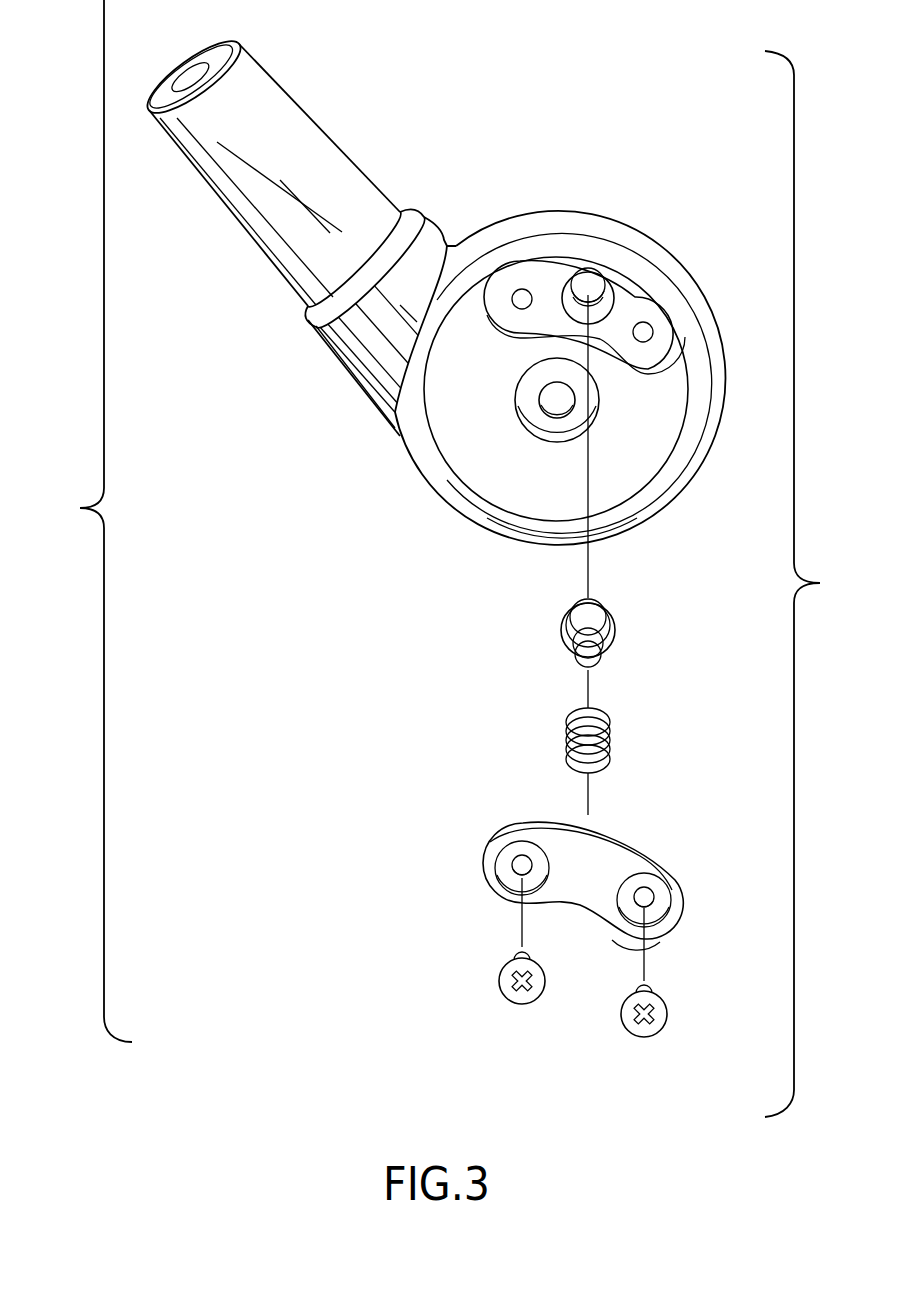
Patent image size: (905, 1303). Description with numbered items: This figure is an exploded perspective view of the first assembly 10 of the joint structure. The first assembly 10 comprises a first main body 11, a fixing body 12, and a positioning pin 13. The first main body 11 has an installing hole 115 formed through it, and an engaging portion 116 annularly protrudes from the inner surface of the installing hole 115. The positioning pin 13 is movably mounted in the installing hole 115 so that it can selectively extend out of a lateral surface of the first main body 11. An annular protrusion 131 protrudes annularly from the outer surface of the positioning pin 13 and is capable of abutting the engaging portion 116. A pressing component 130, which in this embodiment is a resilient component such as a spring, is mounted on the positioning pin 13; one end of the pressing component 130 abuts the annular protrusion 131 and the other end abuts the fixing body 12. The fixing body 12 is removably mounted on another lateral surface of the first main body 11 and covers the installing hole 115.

The first assembly 10 is at (426, 558).
The first main body 11 is at (365, 372).
The fixing body 12 is at (628, 857).
The positioning pin 13 is at (600, 635).
The installing hole 115 is at (603, 305).
The engaging portion 116 is at (568, 278).
The pressing component 130 is at (610, 732).
The annular protrusion 131 is at (567, 622).